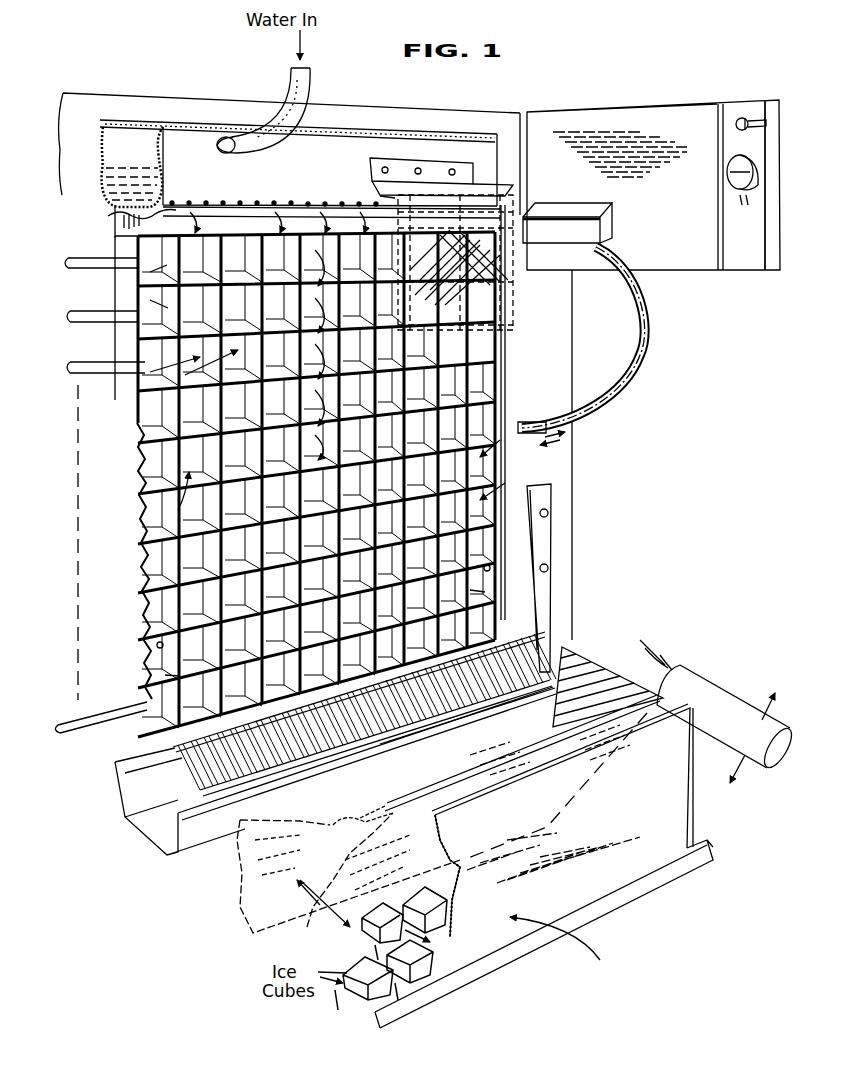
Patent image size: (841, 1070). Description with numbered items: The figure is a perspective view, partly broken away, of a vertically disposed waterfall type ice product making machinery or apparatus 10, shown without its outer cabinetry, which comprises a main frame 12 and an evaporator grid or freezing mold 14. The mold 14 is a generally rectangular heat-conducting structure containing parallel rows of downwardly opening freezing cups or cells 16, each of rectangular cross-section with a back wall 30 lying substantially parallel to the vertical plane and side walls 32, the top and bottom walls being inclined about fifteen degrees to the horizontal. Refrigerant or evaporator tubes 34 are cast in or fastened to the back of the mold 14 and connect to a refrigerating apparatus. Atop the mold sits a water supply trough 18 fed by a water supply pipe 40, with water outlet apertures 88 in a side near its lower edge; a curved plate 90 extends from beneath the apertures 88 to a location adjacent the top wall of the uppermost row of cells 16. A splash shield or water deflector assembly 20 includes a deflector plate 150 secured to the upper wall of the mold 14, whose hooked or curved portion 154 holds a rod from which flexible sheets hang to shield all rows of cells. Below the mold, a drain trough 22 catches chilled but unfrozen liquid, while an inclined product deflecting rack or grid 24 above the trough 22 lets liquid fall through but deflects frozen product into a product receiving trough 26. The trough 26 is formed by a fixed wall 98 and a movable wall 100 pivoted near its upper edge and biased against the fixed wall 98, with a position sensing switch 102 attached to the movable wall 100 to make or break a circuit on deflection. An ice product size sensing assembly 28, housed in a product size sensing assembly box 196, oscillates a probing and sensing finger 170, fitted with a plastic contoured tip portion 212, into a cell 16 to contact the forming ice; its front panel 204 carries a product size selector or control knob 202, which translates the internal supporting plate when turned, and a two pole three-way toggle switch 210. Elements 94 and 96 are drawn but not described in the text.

The ice product making machinery or apparatus 10 is at (595, 536).
The main frame 12 is at (563, 504).
The evaporator grid or freezing mold 14 is at (135, 538).
The freezing cups or cells 16 is at (150, 394).
The water supply trough 18 is at (325, 167).
The splash shield or water deflector assembly 20 is at (483, 237).
The drain trough 22 is at (142, 833).
The product deflecting rack or grid 24 is at (183, 780).
The product receiving trough 26 is at (40, 890).
The ice product size sensing assembly 28 is at (655, 128).
The back wall 30 is at (148, 462).
The side walls 32 is at (150, 300).
The refrigerant or evaporator tubes 34 is at (70, 365).
The water supply pipe 40 is at (310, 84).
The water outlet apertures 88 is at (282, 203).
The curved plate 90 is at (132, 216).
The mounting pin 94 is at (160, 645).
The mounting slot 96 is at (176, 676).
The fixed wall 98 is at (248, 890).
The movable wall 100 is at (366, 826).
The position sensing switch 102 is at (713, 697).
The deflector plate 150 is at (420, 185).
The hooked or curved portion 154 is at (385, 199).
The probing and sensing finger 170 is at (640, 358).
The product size sensing assembly box 196 is at (595, 130).
The product size selector or control knob 202 is at (727, 185).
The front panel 204 is at (740, 262).
The two pole three-way toggle switch 210 is at (760, 112).
The contoured tip portion 212 is at (528, 422).